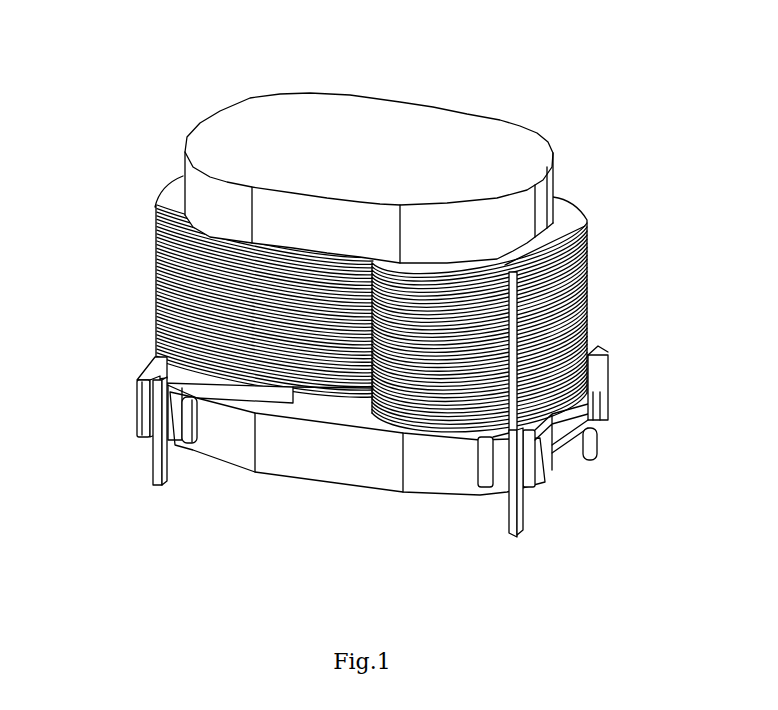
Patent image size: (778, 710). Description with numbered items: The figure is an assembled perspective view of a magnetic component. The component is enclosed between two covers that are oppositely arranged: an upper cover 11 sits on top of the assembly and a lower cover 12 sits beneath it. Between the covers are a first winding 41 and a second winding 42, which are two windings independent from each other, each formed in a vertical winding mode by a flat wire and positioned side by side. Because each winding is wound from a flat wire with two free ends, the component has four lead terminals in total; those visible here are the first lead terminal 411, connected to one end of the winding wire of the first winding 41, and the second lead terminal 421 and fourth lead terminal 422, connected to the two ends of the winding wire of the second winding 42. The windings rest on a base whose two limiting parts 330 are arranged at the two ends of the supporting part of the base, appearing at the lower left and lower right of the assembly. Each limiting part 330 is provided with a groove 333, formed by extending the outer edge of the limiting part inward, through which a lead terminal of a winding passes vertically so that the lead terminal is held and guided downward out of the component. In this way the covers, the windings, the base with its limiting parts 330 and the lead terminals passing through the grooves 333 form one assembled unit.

The upper cover 11 is at (319, 120).
The lower cover 12 is at (340, 450).
The first winding 41 is at (157, 283).
The second winding 42 is at (585, 295).
The first lead terminal 411 is at (195, 450).
The second lead terminal 421 is at (600, 452).
The fourth lead terminal 422 is at (522, 510).
The limiting part 330 is at (147, 402).
The groove 333 is at (145, 450).